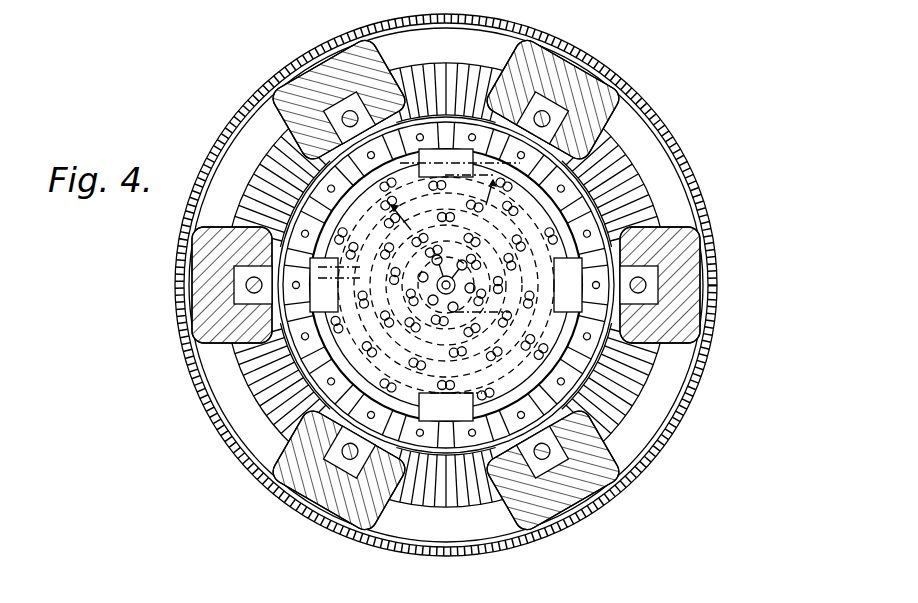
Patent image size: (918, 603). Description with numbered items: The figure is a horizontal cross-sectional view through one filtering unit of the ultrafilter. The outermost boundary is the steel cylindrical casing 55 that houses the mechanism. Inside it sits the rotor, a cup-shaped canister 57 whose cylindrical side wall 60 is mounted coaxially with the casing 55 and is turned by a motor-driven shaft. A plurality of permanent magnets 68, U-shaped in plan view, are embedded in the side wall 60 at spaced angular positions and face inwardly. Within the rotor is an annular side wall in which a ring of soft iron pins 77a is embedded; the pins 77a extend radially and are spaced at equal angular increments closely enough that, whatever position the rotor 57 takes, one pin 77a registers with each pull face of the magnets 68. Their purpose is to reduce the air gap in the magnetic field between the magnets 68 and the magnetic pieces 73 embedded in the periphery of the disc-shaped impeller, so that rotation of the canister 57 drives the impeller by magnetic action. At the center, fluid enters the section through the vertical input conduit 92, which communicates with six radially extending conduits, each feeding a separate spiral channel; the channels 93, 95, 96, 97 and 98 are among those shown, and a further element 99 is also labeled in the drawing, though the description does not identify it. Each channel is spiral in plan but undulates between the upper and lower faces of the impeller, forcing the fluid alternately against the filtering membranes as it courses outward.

The cylindrical casing 55 is at (648, 108).
The canister 57 is at (642, 370).
The cylindrical side wall 60 is at (489, 268).
The permanent magnets 68 is at (284, 98).
The magnetic pieces 73 is at (280, 200).
The soft iron pins 77a is at (548, 220).
The vertical input conduit 92 is at (444, 294).
The spiral channel 93 is at (390, 208).
The spiral channel 95 is at (532, 254).
The spiral channel 96 is at (516, 340).
The spiral channel 97 is at (356, 334).
The spiral channel 98 is at (353, 233).
The winding coil 99 is at (486, 181).